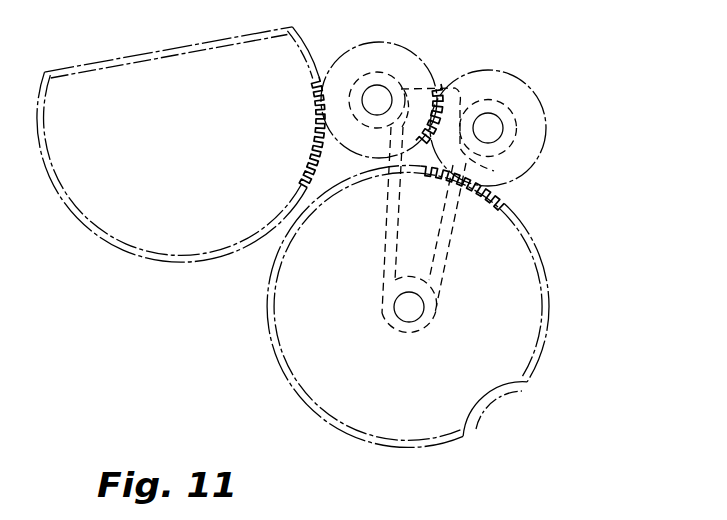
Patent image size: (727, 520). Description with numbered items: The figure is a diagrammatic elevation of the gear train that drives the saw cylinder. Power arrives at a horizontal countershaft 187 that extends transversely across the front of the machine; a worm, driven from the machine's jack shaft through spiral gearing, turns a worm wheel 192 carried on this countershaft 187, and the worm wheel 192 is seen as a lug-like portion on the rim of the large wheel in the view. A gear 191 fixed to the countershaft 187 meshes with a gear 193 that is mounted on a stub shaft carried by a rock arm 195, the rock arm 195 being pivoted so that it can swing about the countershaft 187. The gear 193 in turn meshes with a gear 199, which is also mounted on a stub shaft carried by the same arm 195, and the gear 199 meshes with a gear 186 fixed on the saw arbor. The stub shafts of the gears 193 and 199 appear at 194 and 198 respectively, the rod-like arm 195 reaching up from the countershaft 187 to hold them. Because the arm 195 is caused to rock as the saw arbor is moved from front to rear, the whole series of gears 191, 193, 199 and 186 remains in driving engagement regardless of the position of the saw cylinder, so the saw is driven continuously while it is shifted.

The gear 186 is at (133, 237).
The countershaft 187 is at (418, 313).
The gear 191 is at (518, 348).
The worm wheel 192 is at (498, 412).
The gear 193 is at (527, 115).
The shaft 194 is at (492, 122).
The rock arm 195 is at (442, 265).
The shaft 198 is at (378, 90).
The gear 199 is at (411, 66).